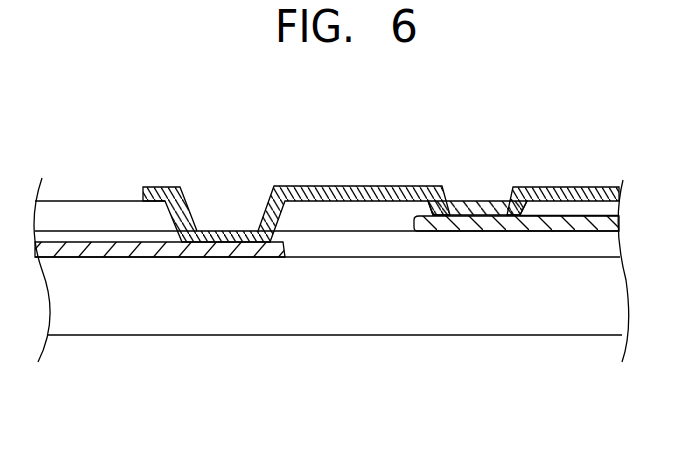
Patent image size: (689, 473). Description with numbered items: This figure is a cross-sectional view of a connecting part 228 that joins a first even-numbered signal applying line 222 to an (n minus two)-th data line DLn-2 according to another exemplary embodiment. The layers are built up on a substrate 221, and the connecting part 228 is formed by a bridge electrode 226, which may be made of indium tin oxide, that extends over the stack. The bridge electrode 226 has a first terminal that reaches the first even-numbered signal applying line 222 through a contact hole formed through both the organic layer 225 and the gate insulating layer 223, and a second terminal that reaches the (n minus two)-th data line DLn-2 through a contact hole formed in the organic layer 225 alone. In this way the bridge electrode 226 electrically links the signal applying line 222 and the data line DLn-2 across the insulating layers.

The substrate 221 is at (598, 305).
The first even-numbered signal applying line 222 is at (175, 255).
The gate insulating layer 223 is at (533, 236).
The organic layer 225 is at (95, 215).
The bridge electrode 226 is at (355, 202).
The connecting part 228 is at (361, 174).
The (n-2)-th data line DLn-2 is at (455, 235).